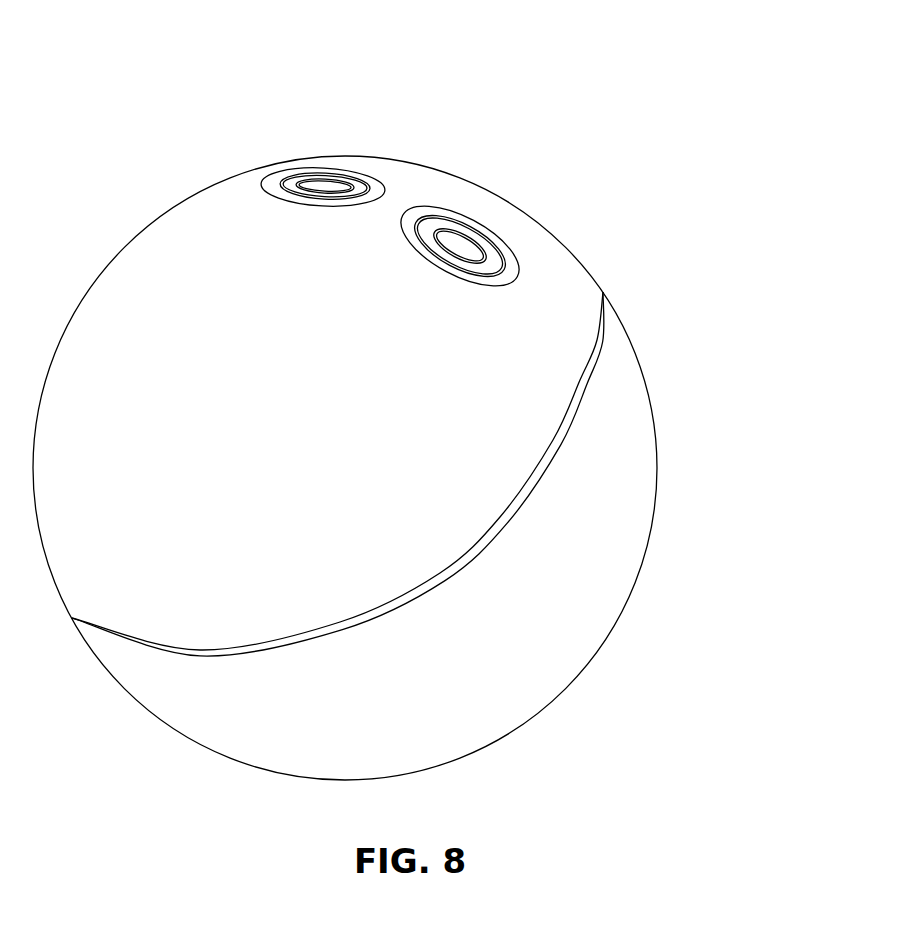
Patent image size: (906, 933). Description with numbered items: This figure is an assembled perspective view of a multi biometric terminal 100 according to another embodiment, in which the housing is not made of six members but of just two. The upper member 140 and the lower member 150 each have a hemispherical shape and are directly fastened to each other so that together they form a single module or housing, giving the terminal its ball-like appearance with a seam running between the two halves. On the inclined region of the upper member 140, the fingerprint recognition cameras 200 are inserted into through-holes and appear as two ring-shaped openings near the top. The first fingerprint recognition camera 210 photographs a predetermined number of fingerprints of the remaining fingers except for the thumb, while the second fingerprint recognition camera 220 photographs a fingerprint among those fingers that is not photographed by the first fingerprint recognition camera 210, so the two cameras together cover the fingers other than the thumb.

The multi biometric terminal 100 is at (600, 195).
The upper member 140 is at (545, 312).
The lower member 150 is at (592, 460).
The fingerprint recognition cameras 200 is at (516, 70).
The first fingerprint recognition camera 210 is at (343, 182).
The second fingerprint recognition camera 220 is at (472, 222).